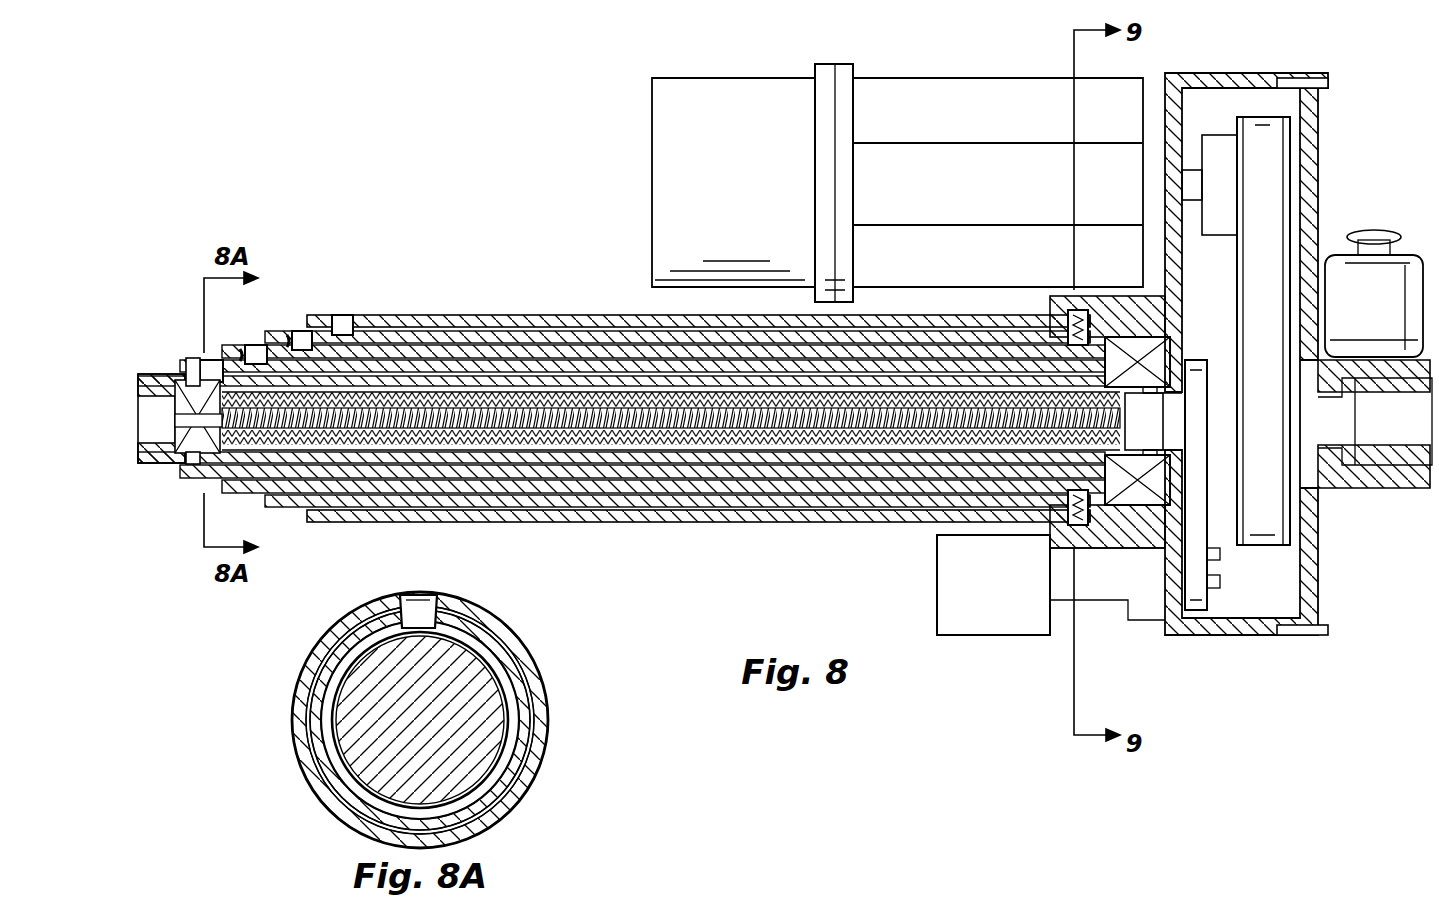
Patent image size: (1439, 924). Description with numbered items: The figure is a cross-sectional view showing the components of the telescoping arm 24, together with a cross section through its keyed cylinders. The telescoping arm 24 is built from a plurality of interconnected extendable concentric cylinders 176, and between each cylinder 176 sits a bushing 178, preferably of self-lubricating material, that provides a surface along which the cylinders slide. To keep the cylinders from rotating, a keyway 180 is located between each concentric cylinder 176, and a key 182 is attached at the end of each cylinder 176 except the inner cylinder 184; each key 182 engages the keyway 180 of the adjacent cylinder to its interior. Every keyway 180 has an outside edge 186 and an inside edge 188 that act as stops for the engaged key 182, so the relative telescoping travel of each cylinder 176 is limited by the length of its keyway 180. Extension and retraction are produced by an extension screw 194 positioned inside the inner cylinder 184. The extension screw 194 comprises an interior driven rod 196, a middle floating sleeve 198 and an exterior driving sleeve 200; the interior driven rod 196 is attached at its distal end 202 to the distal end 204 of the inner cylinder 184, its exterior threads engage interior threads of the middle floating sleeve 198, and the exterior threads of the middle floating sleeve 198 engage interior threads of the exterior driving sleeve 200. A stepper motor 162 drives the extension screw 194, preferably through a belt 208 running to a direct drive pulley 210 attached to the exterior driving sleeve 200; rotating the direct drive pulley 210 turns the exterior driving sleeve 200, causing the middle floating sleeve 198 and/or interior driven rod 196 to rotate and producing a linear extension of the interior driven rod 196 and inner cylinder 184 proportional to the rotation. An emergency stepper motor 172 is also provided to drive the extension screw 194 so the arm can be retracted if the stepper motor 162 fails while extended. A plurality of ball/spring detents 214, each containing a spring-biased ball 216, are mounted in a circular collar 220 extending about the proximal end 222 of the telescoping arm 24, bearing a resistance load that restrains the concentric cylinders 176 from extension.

In FIG. 8, the telescoping arm 24 is at (457, 262).
In FIG. 8, the stepper motor 162 is at (695, 152).
In FIG. 8, the emergency stepper motor 172 is at (952, 598).
In FIG. 8, the extendable concentric cylinders 176 is at (690, 470).
In FIG. 8, the bushing 178 is at (378, 505).
In FIG. 8A, the bushing 178 is at (420, 720).
In FIG. 8, the keyway 180 is at (650, 360).
In FIG. 8A, the keyway 180 is at (480, 612).
In FIG. 8, the key 182 is at (341, 315).
In FIG. 8A, the key 182 is at (415, 605).
In FIG. 8, the inner cylinder 184 is at (215, 457).
In FIG. 8, the outside edge 186 is at (248, 355).
In FIG. 8, the inside edge 188 is at (918, 355).
In FIG. 8, the extension screw 194 is at (605, 445).
In FIG. 8, the interior driven rod 196 is at (812, 440).
In FIG. 8, the middle floating sleeve 198 is at (782, 455).
In FIG. 8, the exterior driving sleeve 200 is at (832, 462).
In FIG. 8, the distal end 202 is at (192, 372).
In FIG. 8, the distal end 204 is at (140, 448).
In FIG. 8, the belt 208 is at (1268, 225).
In FIG. 8, the direct drive pulley 210 is at (1245, 470).
In FIG. 8, the ball/spring detents 214 is at (1075, 308).
In FIG. 8, the ball 216 is at (1100, 548).
In FIG. 8, the circular collar 220 is at (1118, 322).
In FIG. 8, the proximal end 222 is at (1142, 510).